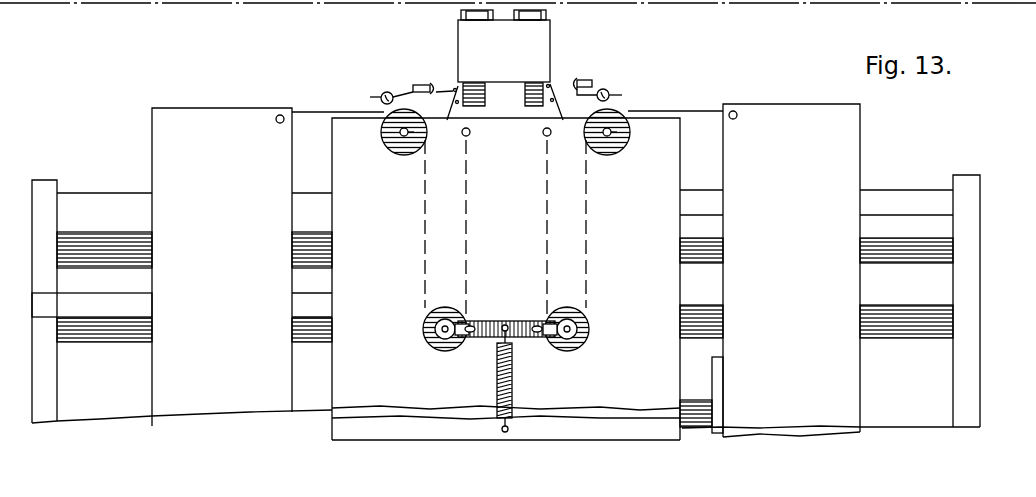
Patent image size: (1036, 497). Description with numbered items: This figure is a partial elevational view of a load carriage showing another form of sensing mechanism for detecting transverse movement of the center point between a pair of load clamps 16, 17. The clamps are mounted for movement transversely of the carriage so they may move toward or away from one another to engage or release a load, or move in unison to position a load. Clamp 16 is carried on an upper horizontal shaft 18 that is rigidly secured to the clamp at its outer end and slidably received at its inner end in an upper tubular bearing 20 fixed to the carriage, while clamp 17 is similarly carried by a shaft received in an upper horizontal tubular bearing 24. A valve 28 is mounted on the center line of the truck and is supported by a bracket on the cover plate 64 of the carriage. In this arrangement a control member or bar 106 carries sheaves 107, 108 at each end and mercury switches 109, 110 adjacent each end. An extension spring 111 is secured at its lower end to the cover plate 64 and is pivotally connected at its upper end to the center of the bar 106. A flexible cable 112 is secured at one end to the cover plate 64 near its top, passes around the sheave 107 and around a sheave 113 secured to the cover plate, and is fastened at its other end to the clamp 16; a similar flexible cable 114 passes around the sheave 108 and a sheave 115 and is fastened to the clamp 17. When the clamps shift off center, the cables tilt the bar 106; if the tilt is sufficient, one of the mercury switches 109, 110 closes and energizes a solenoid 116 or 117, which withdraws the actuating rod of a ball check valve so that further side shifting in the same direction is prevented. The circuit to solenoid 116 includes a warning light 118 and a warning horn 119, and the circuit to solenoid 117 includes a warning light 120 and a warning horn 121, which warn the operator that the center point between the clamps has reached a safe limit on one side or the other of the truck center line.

The load clamp 16 is at (218, 114).
The load clamp 17 is at (1027, 4).
The upper horizontal shaft 18 is at (18, 4).
The upper tubular bearing 20 is at (125, 341).
The upper horizontal tubular bearing 24 is at (900, 197).
The valve 28 is at (551, 50).
The cover plate 64 is at (336, 408).
The control member or bar 106 is at (517, 320).
The sheave 107 is at (442, 312).
The sheave 108 is at (590, 328).
The mercury switch 109 is at (476, 325).
The mercury switch 110 is at (540, 339).
The extension spring 111 is at (497, 386).
The flexible cable 112 is at (335, 110).
The sheave 113 is at (397, 151).
The flexible cable 114 is at (588, 228).
The sheave 115 is at (613, 112).
The solenoid 116 is at (466, 82).
The solenoid 117 is at (547, 83).
The warning light 118 is at (399, 82).
The warning horn 119 is at (427, 85).
The warning light 120 is at (604, 89).
The warning horn 121 is at (580, 79).